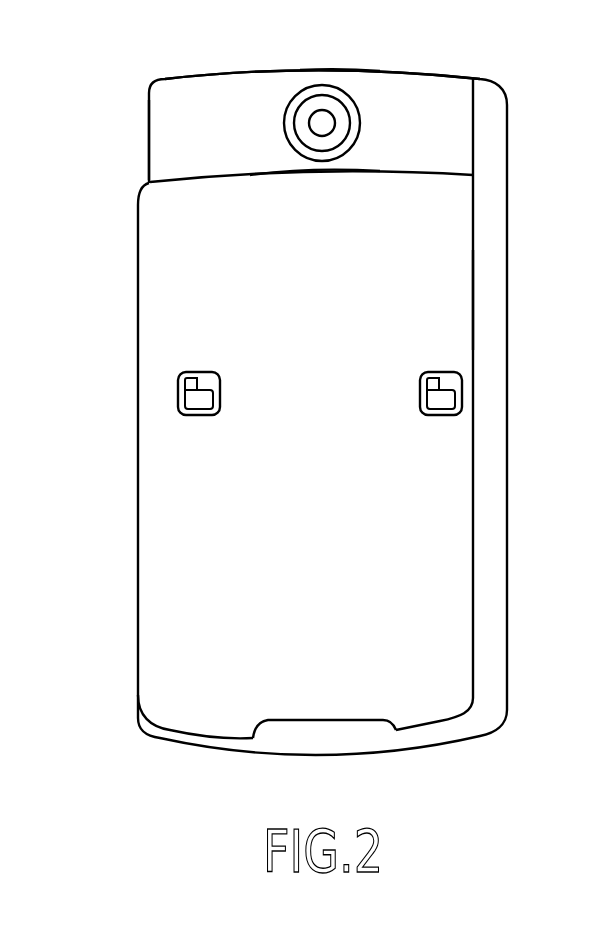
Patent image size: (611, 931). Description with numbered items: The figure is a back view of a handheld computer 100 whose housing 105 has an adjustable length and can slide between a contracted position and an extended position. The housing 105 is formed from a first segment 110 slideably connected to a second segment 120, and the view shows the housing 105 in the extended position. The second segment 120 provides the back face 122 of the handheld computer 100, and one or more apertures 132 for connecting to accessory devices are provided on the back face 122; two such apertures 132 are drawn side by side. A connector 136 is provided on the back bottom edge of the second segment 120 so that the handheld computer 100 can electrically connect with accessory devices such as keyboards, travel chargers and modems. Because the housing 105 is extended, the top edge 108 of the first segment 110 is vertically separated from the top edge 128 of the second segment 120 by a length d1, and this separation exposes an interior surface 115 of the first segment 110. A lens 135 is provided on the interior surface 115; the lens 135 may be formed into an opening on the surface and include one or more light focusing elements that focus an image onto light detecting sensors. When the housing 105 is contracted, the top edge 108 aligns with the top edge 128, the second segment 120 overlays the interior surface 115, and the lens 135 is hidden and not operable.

The handheld computer 100 is at (334, 401).
The housing 105 is at (132, 183).
The top edge of first segment 108 is at (340, 72).
The first segment 110 is at (228, 68).
The interior surface 115 is at (232, 140).
The second segment 120 is at (127, 397).
The back face 122 is at (333, 312).
The top edge of second segment 128 is at (295, 173).
The apertures 132 is at (200, 416).
The lens 135 is at (361, 123).
The connector 136 is at (321, 719).
The length d1 is at (425, 72).